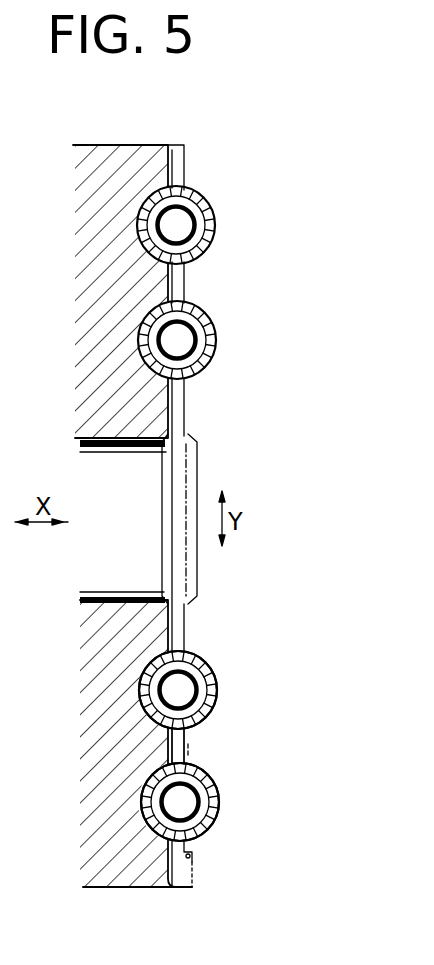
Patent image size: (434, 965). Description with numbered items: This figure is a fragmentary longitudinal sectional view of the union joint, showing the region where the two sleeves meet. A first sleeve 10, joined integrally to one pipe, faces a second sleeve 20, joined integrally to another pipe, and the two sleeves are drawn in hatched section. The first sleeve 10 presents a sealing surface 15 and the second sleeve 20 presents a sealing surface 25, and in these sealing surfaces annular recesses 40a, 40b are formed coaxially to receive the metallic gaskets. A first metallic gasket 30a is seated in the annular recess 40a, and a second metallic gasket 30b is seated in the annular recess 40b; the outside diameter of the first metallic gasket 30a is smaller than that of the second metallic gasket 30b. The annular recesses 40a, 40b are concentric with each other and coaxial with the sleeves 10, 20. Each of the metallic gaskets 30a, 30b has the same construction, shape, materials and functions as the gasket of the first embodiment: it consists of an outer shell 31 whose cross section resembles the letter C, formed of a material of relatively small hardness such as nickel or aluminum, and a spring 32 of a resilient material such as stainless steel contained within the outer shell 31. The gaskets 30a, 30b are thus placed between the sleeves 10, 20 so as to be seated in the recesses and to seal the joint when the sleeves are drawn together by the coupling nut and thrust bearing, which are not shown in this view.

The first sleeve 10 is at (103, 888).
The sealing surface 15 is at (193, 887).
The second sleeve 20 is at (147, 893).
The sealing surface 25 is at (190, 857).
The first metallic gasket 30a is at (253, 755).
The second metallic gasket 30b is at (291, 790).
The outer shell 31 is at (293, 670).
The spring 32 is at (213, 755).
The annular recess 40a is at (268, 415).
The annular recess 40b is at (190, 757).